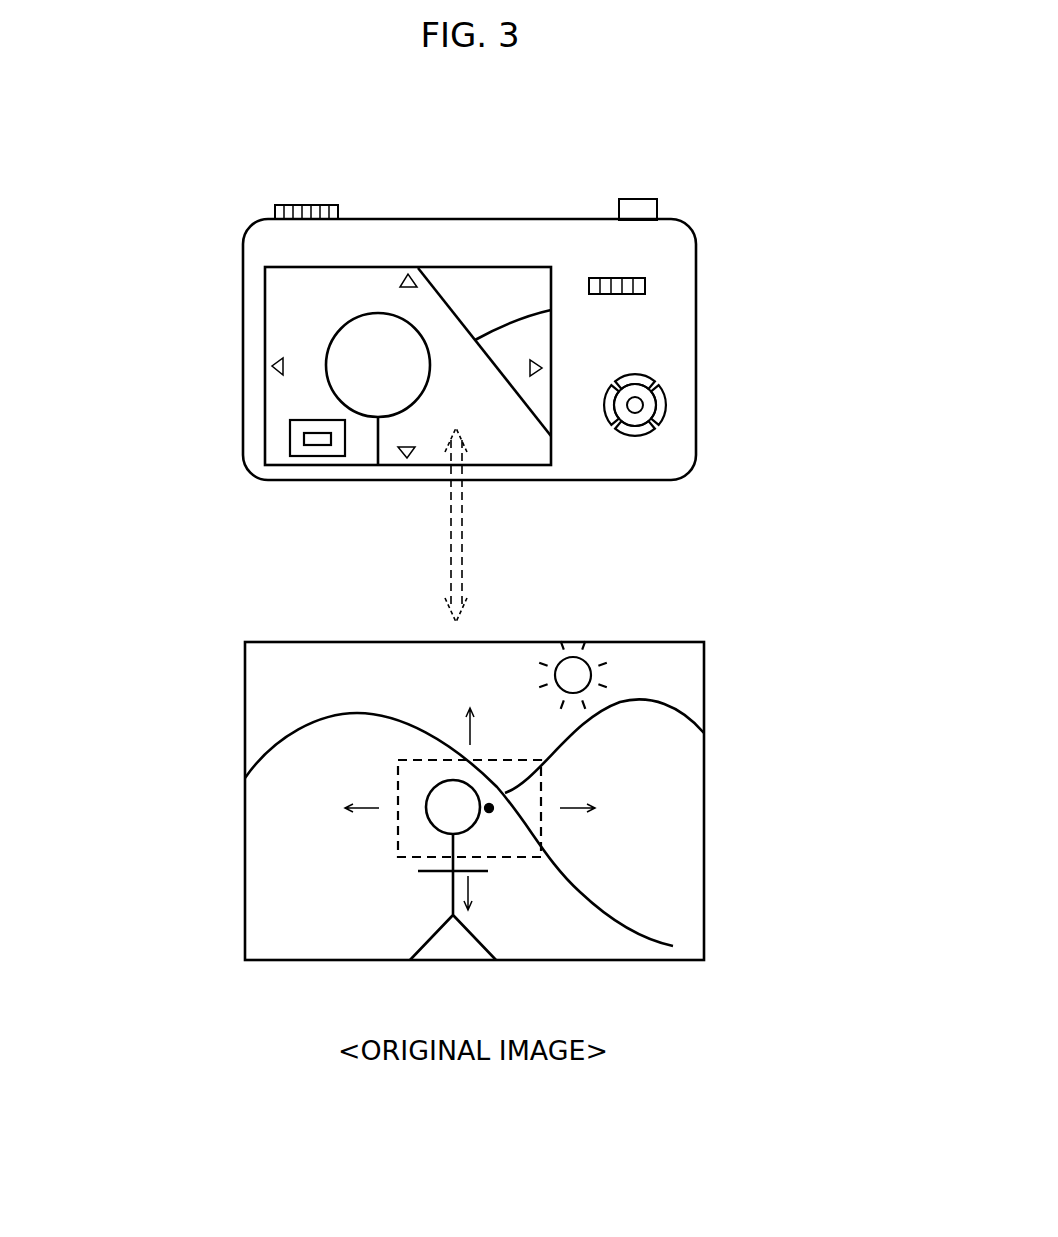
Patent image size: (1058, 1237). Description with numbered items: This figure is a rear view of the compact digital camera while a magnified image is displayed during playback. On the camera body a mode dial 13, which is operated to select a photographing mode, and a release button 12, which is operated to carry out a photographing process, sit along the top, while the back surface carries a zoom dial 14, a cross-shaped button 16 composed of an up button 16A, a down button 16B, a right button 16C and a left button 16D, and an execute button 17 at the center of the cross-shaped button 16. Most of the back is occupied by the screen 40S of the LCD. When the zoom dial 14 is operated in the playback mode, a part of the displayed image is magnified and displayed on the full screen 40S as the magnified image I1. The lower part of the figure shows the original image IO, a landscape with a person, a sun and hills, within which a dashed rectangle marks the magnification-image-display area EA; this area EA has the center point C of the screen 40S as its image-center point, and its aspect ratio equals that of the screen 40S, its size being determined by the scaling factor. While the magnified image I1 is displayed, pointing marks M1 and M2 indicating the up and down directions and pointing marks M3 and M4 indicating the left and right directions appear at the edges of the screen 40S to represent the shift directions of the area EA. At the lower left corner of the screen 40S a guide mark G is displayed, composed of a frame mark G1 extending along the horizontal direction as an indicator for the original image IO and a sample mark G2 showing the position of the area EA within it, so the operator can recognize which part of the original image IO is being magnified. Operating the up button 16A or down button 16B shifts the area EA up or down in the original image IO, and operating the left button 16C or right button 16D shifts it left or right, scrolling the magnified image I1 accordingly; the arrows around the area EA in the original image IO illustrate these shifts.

The release button 12 is at (638, 199).
The mode dial 13 is at (311, 205).
The zoom dial 14 is at (645, 285).
The cross-shaped button 16 is at (661, 459).
The up button 16A is at (633, 380).
The down button 16B is at (633, 437).
The right button 16C is at (603, 407).
The left button 16D is at (665, 405).
The execute button 17 is at (637, 403).
The screen 40S is at (524, 268).
The magnified image I1 is at (489, 267).
The pointing mark M1 is at (398, 275).
The pointing mark M2 is at (408, 458).
The pointing mark M3 is at (277, 365).
The pointing mark M4 is at (535, 376).
The guide mark G is at (260, 468).
The frame mark G1 is at (317, 420).
The sample mark G2 is at (320, 445).
The original image IO is at (707, 805).
The magnification-image-display area EA is at (513, 760).
The center point C is at (491, 810).